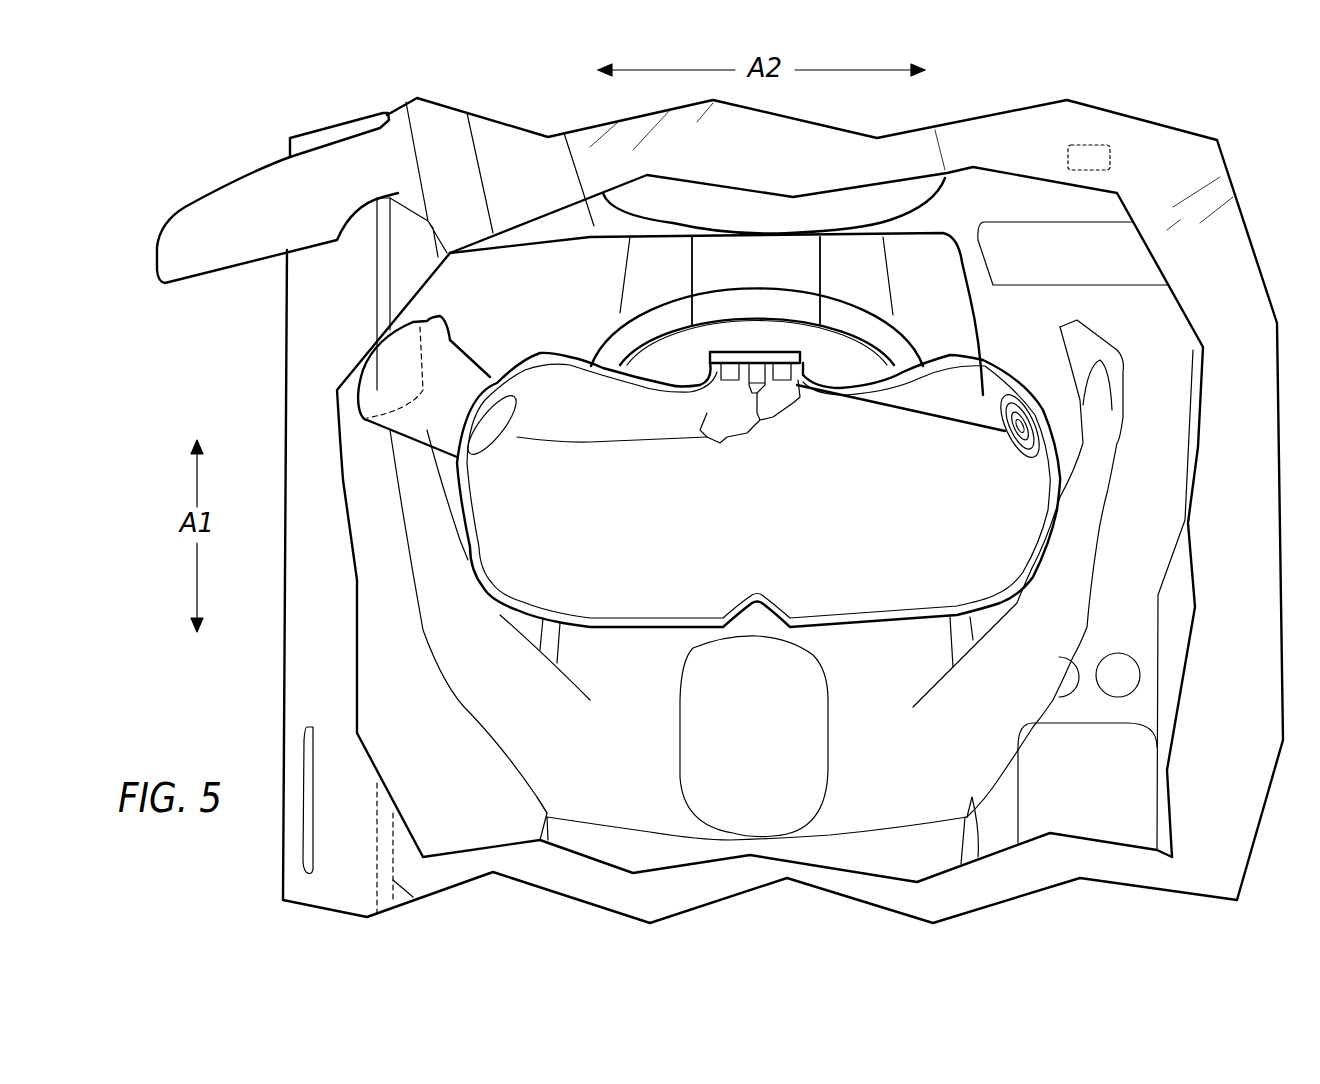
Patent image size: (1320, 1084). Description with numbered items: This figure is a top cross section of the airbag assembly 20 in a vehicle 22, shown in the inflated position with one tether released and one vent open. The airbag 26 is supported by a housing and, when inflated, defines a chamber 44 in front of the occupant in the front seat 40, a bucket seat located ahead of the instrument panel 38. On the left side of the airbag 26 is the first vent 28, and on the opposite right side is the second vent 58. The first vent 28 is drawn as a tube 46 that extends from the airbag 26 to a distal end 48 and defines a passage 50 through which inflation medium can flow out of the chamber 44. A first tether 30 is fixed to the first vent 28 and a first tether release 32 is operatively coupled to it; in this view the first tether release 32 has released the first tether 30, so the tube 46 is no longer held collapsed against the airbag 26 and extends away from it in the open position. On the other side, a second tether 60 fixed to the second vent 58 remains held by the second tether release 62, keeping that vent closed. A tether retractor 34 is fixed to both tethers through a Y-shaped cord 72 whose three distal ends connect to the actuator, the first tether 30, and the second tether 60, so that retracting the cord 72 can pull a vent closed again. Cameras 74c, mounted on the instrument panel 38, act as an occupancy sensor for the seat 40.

The airbag assembly 20 is at (762, 318).
The vehicle 22 is at (330, 135).
The airbag 26 is at (647, 634).
The first vent 28 is at (487, 460).
The first tether 30 is at (595, 447).
The first tether release 32 is at (730, 367).
The tether retractor 34 is at (760, 367).
The instrument panel 38 is at (597, 210).
The front seat 40 is at (940, 847).
The chamber 44 is at (758, 539).
The tube 46 is at (359, 390).
The distal end 48 is at (390, 365).
The passage 50 is at (388, 365).
The second vent 58 is at (1023, 460).
The second tether 60 is at (940, 423).
The second tether release 62 is at (781, 367).
The cord 72 is at (720, 460).
The cameras 74c is at (1093, 143).